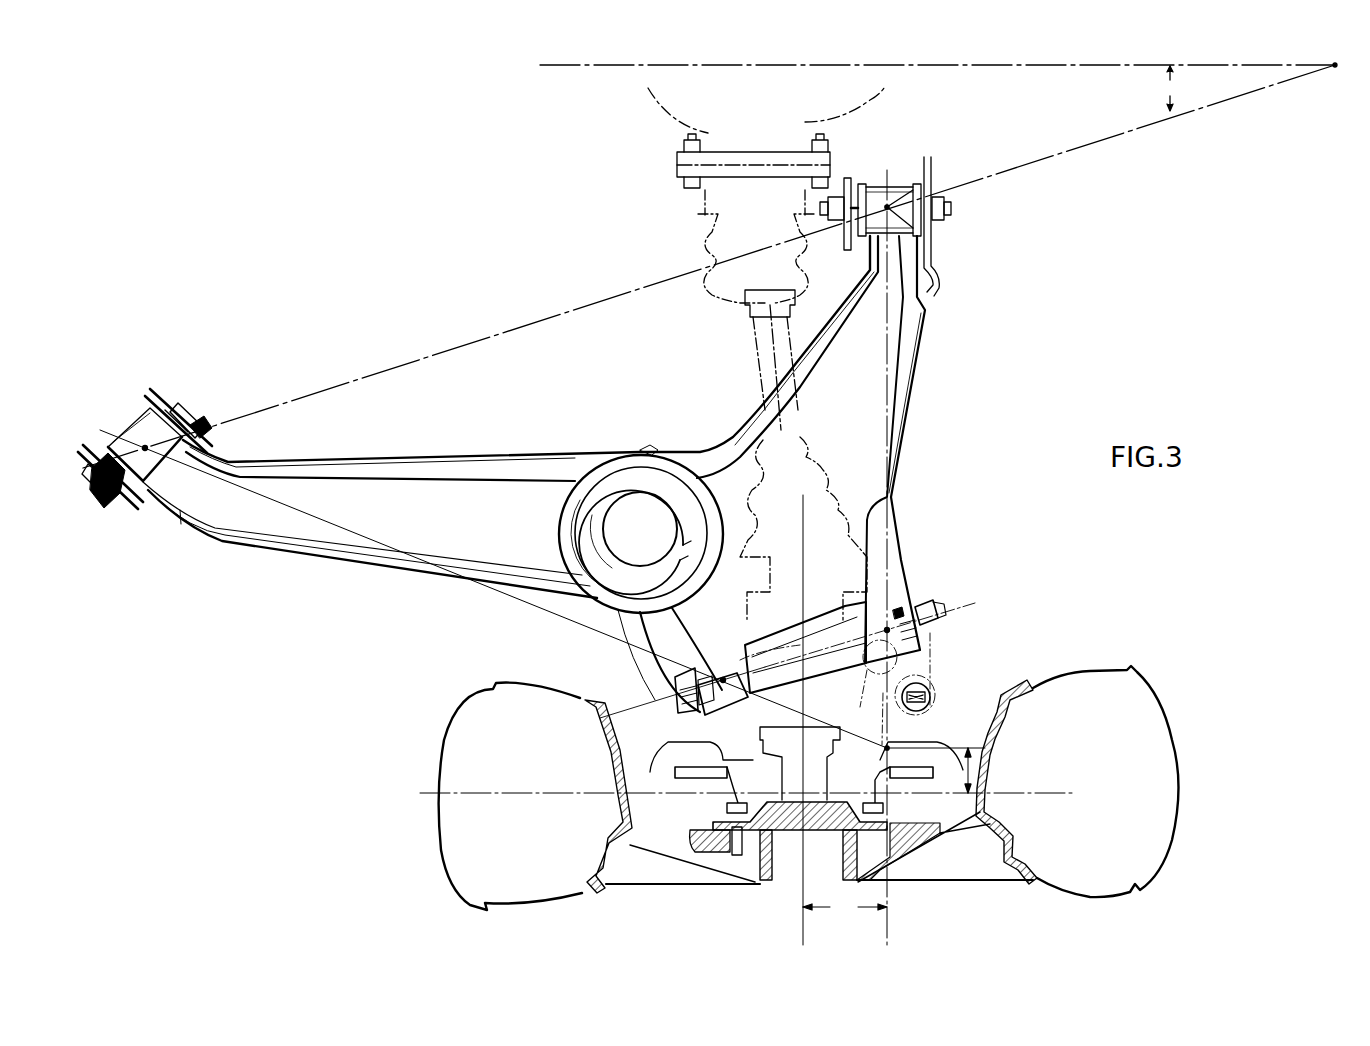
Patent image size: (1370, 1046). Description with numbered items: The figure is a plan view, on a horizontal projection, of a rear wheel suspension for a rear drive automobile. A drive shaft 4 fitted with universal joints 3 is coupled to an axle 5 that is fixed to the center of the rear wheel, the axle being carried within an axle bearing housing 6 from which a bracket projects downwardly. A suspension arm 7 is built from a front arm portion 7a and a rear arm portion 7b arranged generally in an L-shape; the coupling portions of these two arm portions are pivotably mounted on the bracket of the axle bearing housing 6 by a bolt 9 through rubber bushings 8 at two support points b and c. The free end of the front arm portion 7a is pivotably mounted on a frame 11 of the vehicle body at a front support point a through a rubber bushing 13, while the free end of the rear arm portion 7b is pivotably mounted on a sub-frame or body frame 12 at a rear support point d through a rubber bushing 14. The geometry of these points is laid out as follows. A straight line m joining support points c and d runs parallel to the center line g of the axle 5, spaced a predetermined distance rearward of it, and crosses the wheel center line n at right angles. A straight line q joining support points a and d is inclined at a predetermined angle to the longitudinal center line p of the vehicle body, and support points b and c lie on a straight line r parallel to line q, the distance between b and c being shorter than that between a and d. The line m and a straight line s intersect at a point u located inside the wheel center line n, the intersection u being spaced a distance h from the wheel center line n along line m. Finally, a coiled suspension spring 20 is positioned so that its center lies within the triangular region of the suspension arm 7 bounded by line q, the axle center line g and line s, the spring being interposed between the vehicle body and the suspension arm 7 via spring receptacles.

The universal joints 3 is at (700, 246).
The drive shaft 4 is at (763, 347).
The axle 5 is at (778, 758).
The axle bearing housing 6 is at (880, 678).
The suspension arm 7 is at (508, 476).
The front arm portion 7a is at (348, 514).
The rear arm portion 7b is at (878, 372).
The rubber bushings 8 is at (740, 645).
The bolt 9 is at (690, 712).
The frame 11 is at (157, 390).
The sub-frame or body frame 12 is at (928, 176).
The rubber bushing 13 is at (160, 428).
The rubber bushing 14 is at (868, 186).
The coiled suspension spring 20 is at (573, 556).
The front support point a is at (144, 446).
The support point b is at (787, 669).
The support point c is at (888, 628).
The rear support point d is at (940, 236).
The longitudinal center line p is at (1238, 62).
The straight line q is at (1082, 150).
The straight line s is at (556, 614).
The intersection point u is at (887, 748).
The distance h is at (936, 770).
The wheel center line n is at (1070, 785).
The center line of the axle g is at (800, 890).
The straight line m is at (890, 896).
The straight line r is at (960, 612).